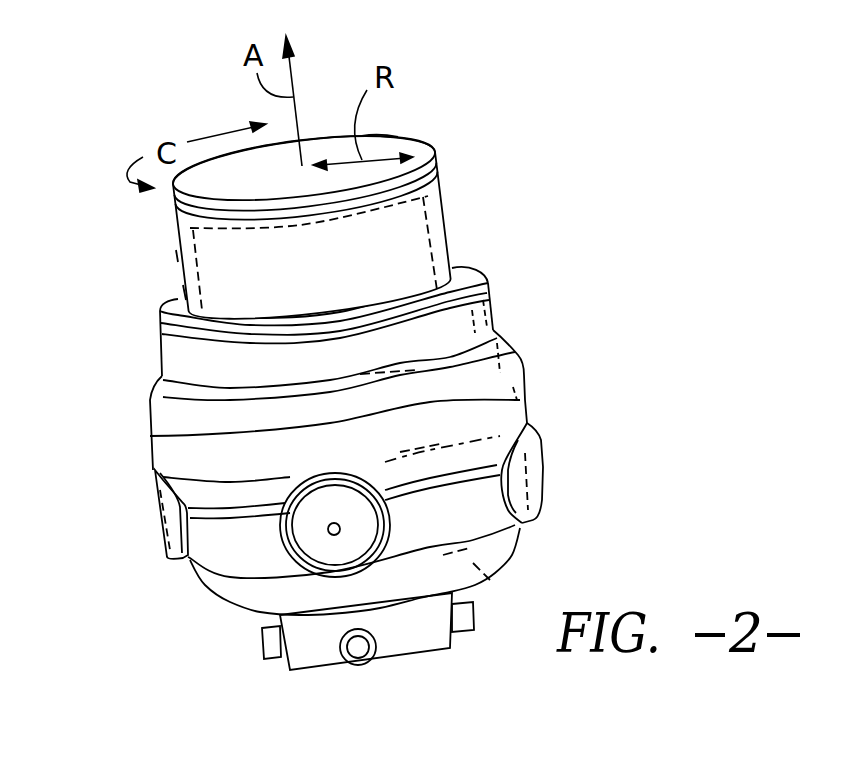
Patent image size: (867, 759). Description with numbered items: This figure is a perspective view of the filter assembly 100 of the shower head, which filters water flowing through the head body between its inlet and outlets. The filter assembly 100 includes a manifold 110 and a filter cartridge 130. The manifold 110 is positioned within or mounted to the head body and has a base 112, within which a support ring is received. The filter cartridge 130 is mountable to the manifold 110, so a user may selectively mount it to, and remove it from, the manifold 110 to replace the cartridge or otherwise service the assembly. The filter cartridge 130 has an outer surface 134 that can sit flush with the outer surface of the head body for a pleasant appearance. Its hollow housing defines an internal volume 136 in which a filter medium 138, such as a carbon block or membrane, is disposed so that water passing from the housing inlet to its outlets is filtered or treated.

The filter assembly 100 is at (590, 184).
The manifold 110 is at (525, 390).
The base 112 is at (168, 447).
The filter cartridge 130 is at (448, 223).
The outer surface 134 is at (377, 148).
The internal volume 136 is at (186, 257).
The filter medium 138 is at (189, 288).